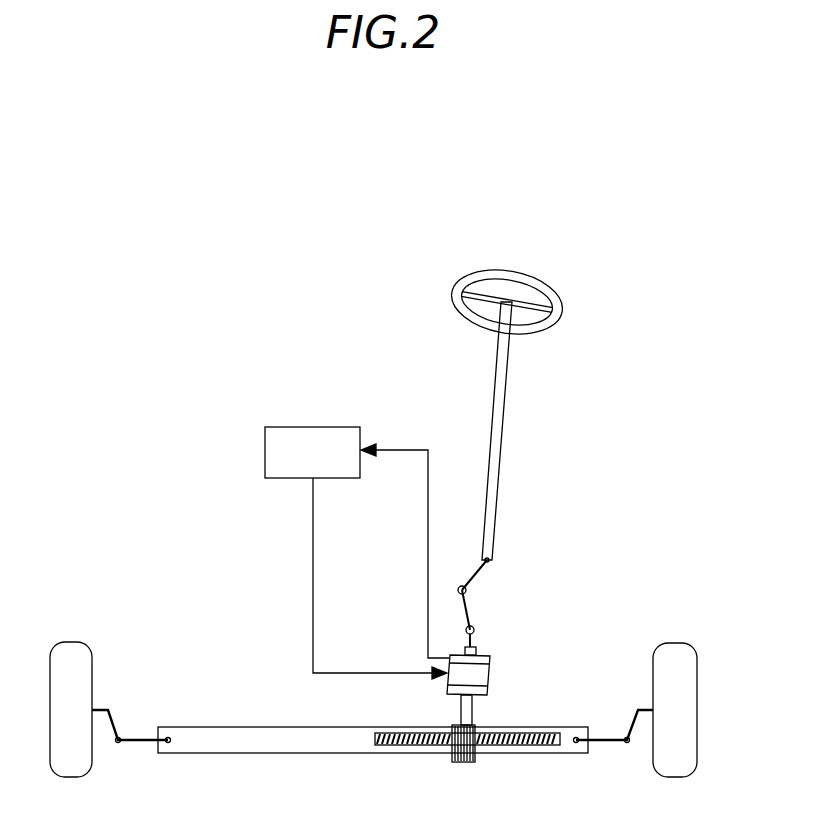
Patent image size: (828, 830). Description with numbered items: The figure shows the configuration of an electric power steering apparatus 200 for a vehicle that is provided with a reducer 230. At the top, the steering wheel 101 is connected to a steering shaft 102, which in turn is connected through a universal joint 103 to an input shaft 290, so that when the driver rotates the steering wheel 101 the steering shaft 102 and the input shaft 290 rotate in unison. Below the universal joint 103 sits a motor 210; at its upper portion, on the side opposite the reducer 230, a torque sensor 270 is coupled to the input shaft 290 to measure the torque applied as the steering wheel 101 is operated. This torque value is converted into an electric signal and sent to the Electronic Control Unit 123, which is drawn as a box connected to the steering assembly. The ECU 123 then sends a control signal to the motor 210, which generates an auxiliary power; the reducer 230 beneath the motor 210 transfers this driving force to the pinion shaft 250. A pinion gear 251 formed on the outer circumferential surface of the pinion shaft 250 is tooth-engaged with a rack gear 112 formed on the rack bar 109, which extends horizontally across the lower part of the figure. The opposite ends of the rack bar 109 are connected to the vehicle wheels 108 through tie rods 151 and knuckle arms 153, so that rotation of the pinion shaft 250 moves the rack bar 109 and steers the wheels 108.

The electric power steering apparatus 200 is at (147, 265).
The steering wheel 101 is at (451, 291).
The steering shaft 102 is at (505, 393).
The universal joint 103 is at (478, 582).
The input shaft 290 is at (476, 650).
The torque sensor 270 is at (492, 662).
The motor 210 is at (475, 666).
The reducer 230 is at (447, 690).
The pinion shaft 250 is at (482, 710).
The pinion gear 251 is at (458, 765).
The rack gear 112 is at (530, 747).
The rack bar 109 is at (272, 754).
The vehicle wheels 108 is at (78, 652).
The tie rods 151 is at (140, 735).
The knuckle arms 153 is at (648, 706).
The Electronic Control Unit (ECU) 123 is at (318, 426).